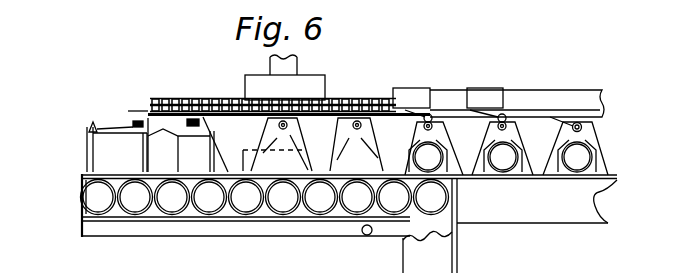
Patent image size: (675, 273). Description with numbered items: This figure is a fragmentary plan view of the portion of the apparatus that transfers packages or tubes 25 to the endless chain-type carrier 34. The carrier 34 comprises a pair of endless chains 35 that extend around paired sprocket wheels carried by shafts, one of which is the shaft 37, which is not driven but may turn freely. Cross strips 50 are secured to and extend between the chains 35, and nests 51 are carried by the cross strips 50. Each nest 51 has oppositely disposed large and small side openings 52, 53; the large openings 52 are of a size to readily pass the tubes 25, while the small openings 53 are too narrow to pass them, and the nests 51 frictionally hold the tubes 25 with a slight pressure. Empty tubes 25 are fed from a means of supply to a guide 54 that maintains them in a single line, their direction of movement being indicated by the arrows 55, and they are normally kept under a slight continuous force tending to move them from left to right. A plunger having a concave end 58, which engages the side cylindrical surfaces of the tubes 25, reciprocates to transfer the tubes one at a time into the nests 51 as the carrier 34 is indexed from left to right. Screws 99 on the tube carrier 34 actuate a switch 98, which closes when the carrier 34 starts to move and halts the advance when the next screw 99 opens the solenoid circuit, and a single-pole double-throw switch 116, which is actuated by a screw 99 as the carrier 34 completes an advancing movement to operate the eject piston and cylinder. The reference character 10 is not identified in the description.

The pallet plate 10 is at (538, 58).
The tubes 25 is at (236, 216).
The endless chain-type carrier 34 is at (124, 106).
The endless chains 35 is at (344, 99).
The shaft 37 is at (298, 63).
The cross strips 50 is at (208, 128).
The nests 51 is at (627, 139).
The large side openings 52 is at (607, 202).
The small side openings 53 is at (353, 125).
The guide 54 is at (121, 241).
The arrows 55 is at (66, 198).
The concave end 58 is at (413, 238).
The switch 98 is at (412, 90).
The screws 99 is at (136, 120).
The single-pole double-throw switch 116 is at (478, 88).